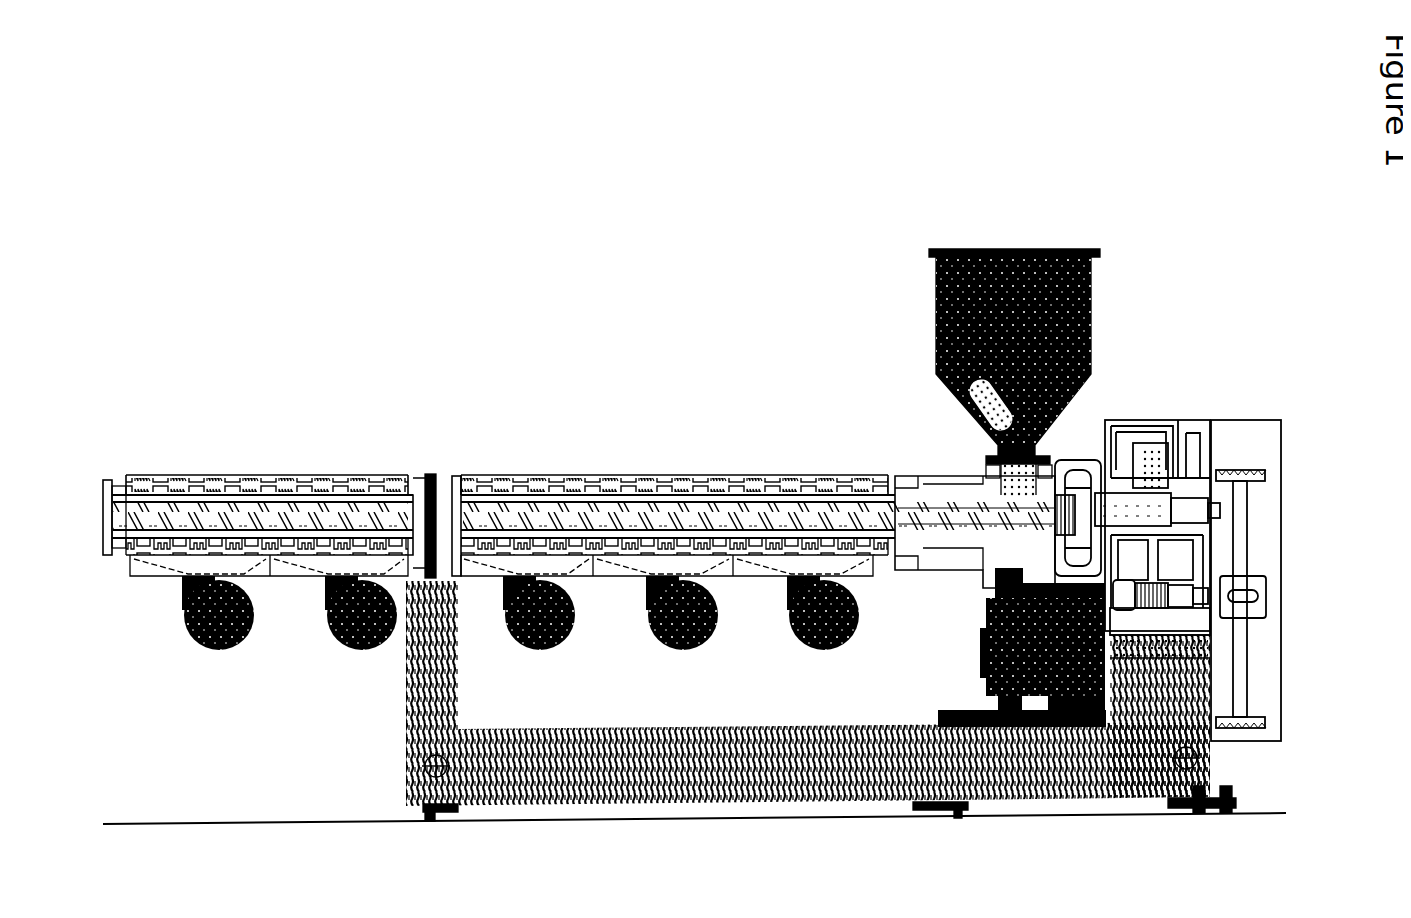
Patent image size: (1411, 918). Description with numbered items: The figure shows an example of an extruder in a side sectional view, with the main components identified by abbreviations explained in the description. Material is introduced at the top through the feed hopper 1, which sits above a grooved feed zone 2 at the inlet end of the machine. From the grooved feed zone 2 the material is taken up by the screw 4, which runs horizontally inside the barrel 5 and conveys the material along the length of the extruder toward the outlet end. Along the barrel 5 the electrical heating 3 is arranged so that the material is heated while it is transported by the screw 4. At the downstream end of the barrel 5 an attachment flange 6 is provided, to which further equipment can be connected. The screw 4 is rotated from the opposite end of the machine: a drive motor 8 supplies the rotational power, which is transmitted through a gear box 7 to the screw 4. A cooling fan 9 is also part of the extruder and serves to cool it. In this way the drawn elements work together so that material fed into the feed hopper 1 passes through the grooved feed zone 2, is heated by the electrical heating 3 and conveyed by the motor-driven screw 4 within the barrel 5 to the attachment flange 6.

The feed hopper 1 is at (1024, 243).
The grooved feed zone 2 is at (955, 485).
The electrical heating 3 is at (700, 465).
The screw 4 is at (556, 510).
The barrel 5 is at (305, 490).
The attachment flange 6 is at (110, 470).
The gear box 7 is at (1137, 428).
The drive motor 8 is at (1040, 690).
The cooling fan 9 is at (681, 640).